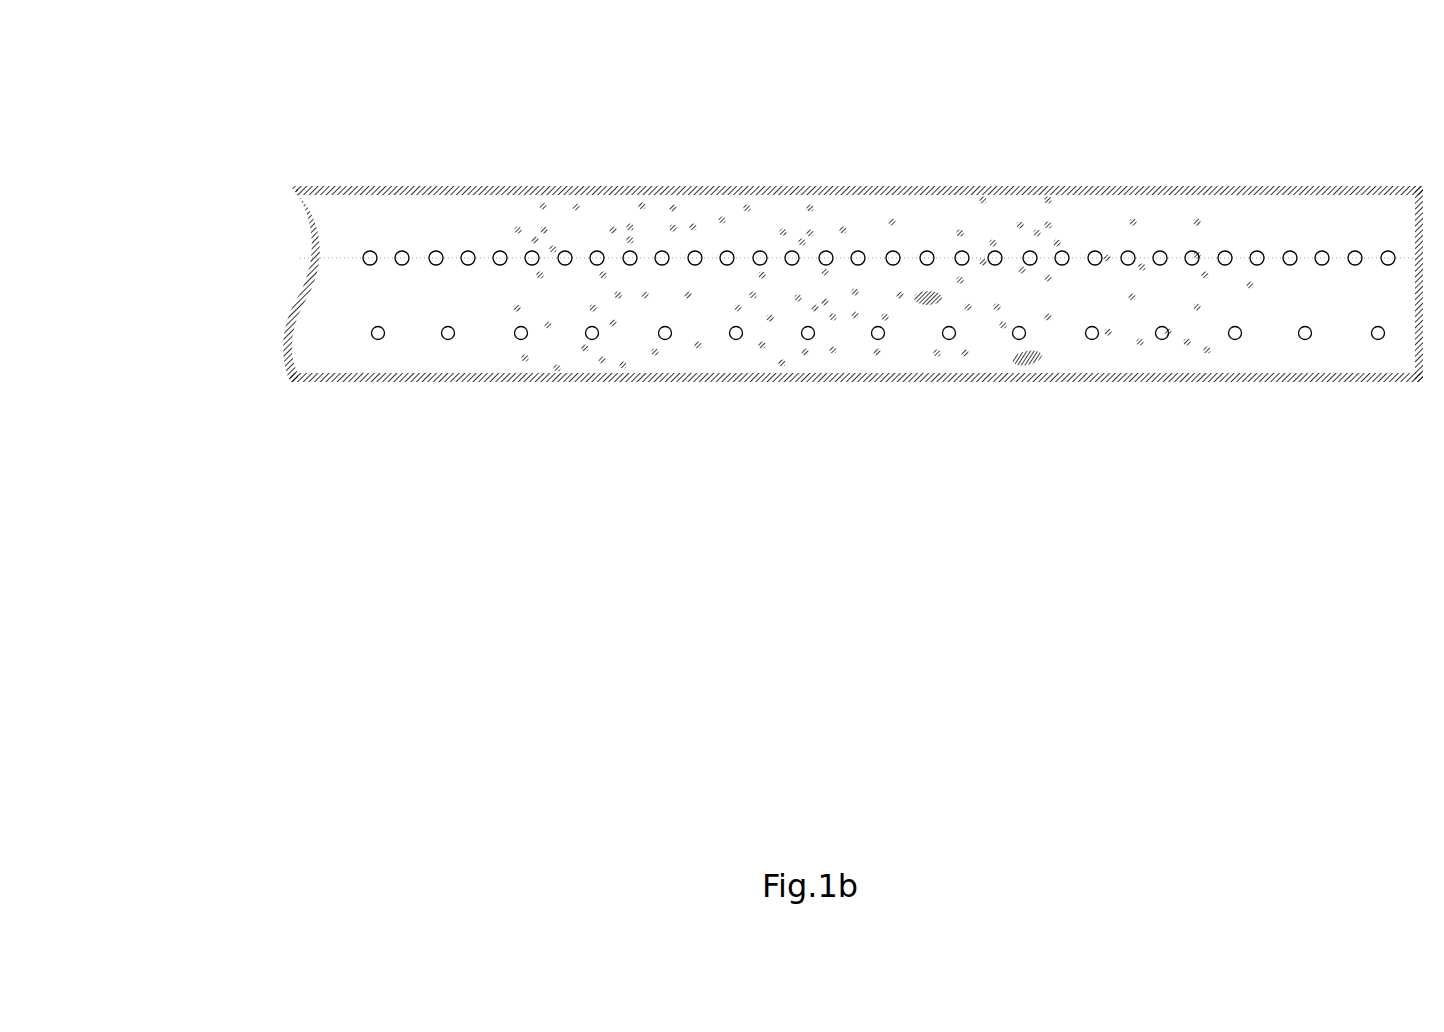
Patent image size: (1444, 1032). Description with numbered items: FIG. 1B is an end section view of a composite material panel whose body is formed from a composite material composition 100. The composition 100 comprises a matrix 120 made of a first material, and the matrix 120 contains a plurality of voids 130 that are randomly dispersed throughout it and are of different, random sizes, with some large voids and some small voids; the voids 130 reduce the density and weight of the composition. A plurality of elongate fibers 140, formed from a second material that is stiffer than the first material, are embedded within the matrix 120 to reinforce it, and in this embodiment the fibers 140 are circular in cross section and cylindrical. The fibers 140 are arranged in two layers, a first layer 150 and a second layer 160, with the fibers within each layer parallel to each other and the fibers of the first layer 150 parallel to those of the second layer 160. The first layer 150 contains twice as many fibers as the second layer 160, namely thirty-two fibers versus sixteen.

The composite material composition 100 is at (502, 500).
The matrix 120 is at (477, 358).
The voids 130 is at (792, 368).
The fibers 140 is at (370, 327).
The first layer 150 is at (725, 250).
The second layer 160 is at (1092, 325).